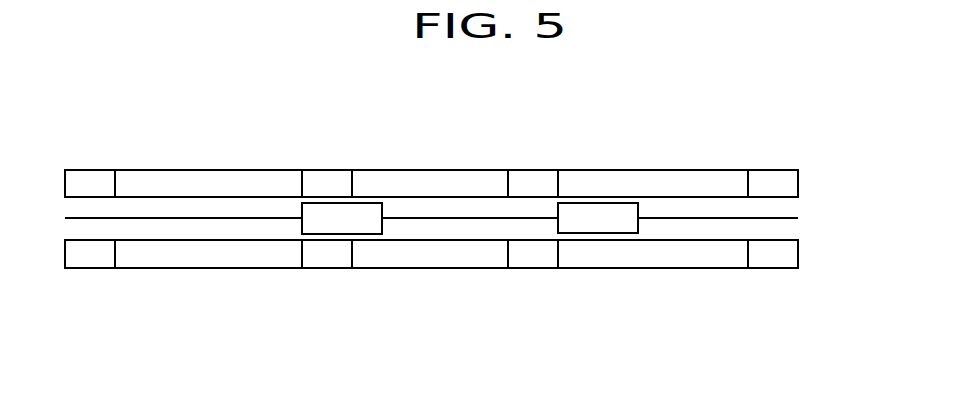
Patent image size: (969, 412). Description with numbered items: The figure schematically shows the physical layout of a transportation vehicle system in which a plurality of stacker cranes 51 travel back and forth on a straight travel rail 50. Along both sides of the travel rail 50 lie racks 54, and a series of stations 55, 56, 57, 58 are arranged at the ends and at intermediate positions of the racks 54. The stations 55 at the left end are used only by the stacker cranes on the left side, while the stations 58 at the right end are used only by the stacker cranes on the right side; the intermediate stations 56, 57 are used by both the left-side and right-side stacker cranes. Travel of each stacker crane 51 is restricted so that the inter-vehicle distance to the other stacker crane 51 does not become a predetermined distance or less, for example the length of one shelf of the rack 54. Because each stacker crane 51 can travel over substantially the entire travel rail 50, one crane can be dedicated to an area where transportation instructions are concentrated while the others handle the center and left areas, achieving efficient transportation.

The travel rail 50 is at (430, 217).
The stacker crane 51 is at (360, 215).
The rack 54 is at (212, 168).
The station 55 is at (86, 175).
The station 56 is at (320, 175).
The station 57 is at (530, 177).
The station 58 is at (772, 175).